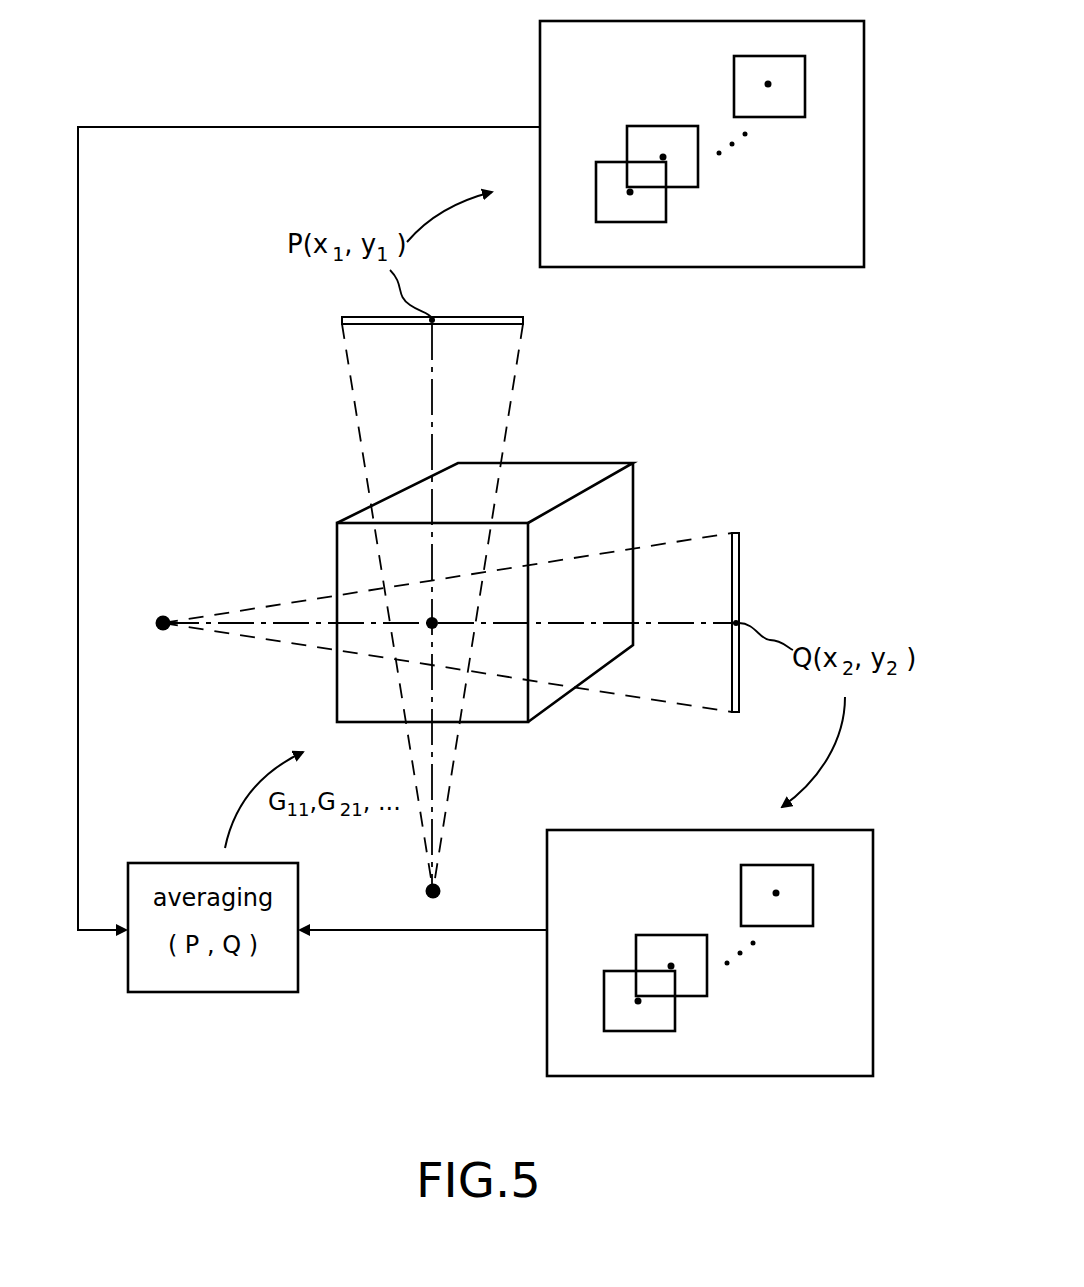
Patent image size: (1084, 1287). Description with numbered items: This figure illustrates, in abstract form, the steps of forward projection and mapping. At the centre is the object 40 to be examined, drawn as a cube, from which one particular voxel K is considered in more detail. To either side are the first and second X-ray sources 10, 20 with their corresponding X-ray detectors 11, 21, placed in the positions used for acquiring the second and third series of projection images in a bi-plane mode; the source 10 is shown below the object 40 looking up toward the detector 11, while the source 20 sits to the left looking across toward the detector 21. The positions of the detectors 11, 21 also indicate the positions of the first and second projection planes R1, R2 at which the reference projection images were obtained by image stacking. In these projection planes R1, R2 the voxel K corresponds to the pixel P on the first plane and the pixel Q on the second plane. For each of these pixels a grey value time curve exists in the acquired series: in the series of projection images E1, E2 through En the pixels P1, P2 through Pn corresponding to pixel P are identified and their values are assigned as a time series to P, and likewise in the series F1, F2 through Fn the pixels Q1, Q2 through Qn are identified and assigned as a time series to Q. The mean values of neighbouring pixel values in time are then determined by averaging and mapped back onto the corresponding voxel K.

The first X-ray source 10 is at (441, 891).
The X-ray detector 11 is at (342, 320).
The second X-ray source 20 is at (163, 631).
The X-ray detector 21 is at (733, 712).
The object 40 is at (633, 497).
The voxel K is at (436, 618).
The first projection plane R1 is at (508, 325).
The second projection plane R2 is at (739, 570).
The projection image E1 is at (666, 212).
The projection image E2 is at (698, 175).
The projection image En is at (792, 117).
The projection image F1 is at (675, 1021).
The projection image F2 is at (707, 985).
The projection image Fn is at (798, 926).
The pixel P1 is at (630, 192).
The pixel P2 is at (663, 157).
The pixel Pn is at (768, 84).
The pixel Q1 is at (638, 1001).
The pixel Q2 is at (671, 966).
The pixel Qn is at (776, 893).